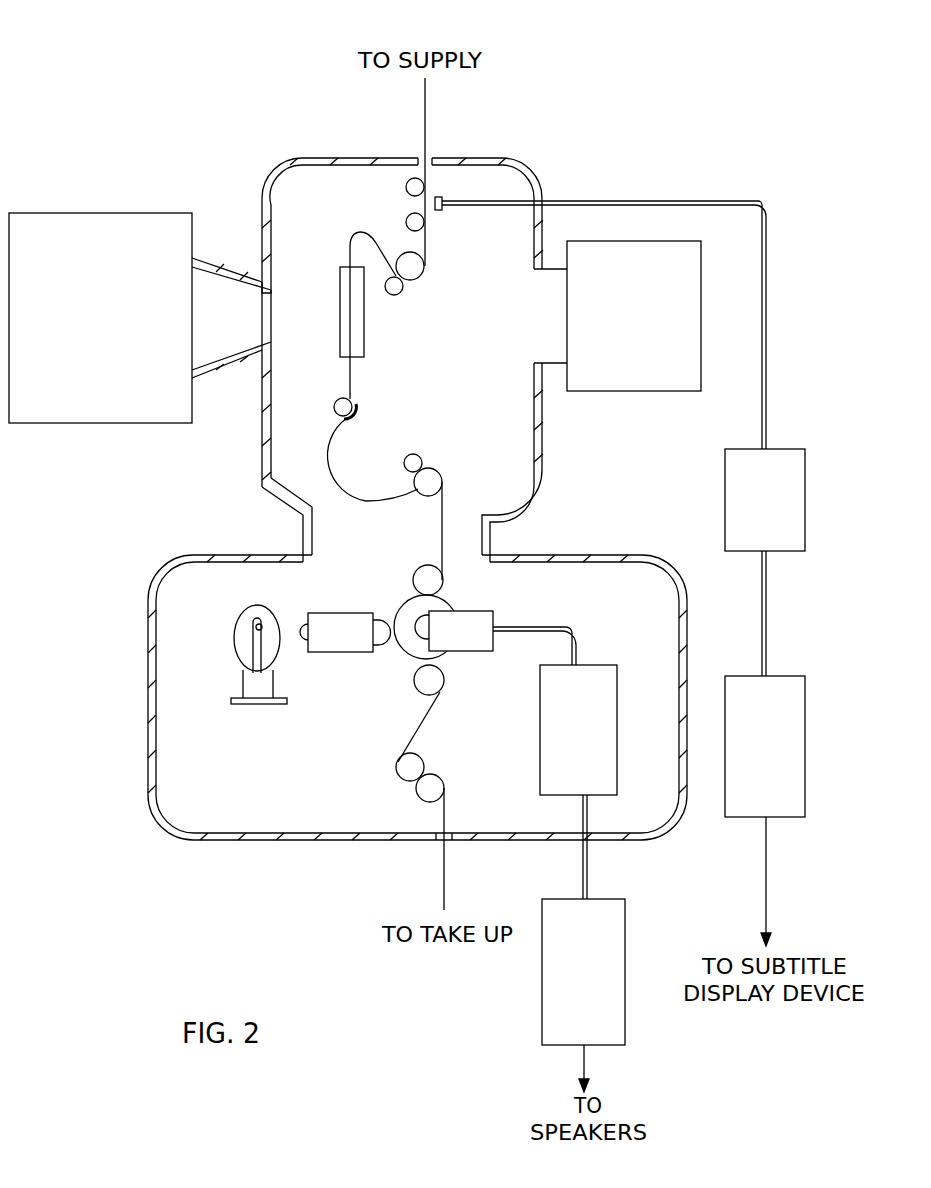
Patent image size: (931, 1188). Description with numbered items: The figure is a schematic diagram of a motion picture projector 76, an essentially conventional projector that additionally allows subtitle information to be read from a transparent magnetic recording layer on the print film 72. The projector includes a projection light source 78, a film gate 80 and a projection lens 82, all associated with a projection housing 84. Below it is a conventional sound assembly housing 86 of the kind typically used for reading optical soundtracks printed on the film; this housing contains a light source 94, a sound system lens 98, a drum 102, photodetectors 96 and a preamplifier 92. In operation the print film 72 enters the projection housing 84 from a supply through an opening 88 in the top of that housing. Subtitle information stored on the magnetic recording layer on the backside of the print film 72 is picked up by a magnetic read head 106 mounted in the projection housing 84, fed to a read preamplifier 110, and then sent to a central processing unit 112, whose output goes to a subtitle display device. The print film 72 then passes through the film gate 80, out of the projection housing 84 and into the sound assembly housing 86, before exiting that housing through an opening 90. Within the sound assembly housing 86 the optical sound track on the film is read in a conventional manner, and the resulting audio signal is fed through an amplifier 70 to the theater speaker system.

The amplifier 70 is at (542, 1009).
The print film 72 is at (442, 552).
The motion picture projector 76 is at (566, 108).
The projection light source 78 is at (140, 212).
The film gate 80 is at (364, 330).
The projection lens 82 is at (610, 392).
The projection housing 84 is at (545, 457).
The sound assembly housing 86 is at (155, 580).
The opening 88 is at (432, 158).
The opening 90 is at (452, 842).
The preamplifier 92 is at (540, 730).
The light source 94 is at (236, 630).
The photodetectors 96 is at (495, 611).
The sound system lens 98 is at (345, 612).
The drum 102 is at (452, 604).
The magnetic read head 106 is at (440, 212).
The read preamplifier 110 is at (787, 552).
The central processing unit 112 is at (793, 818).